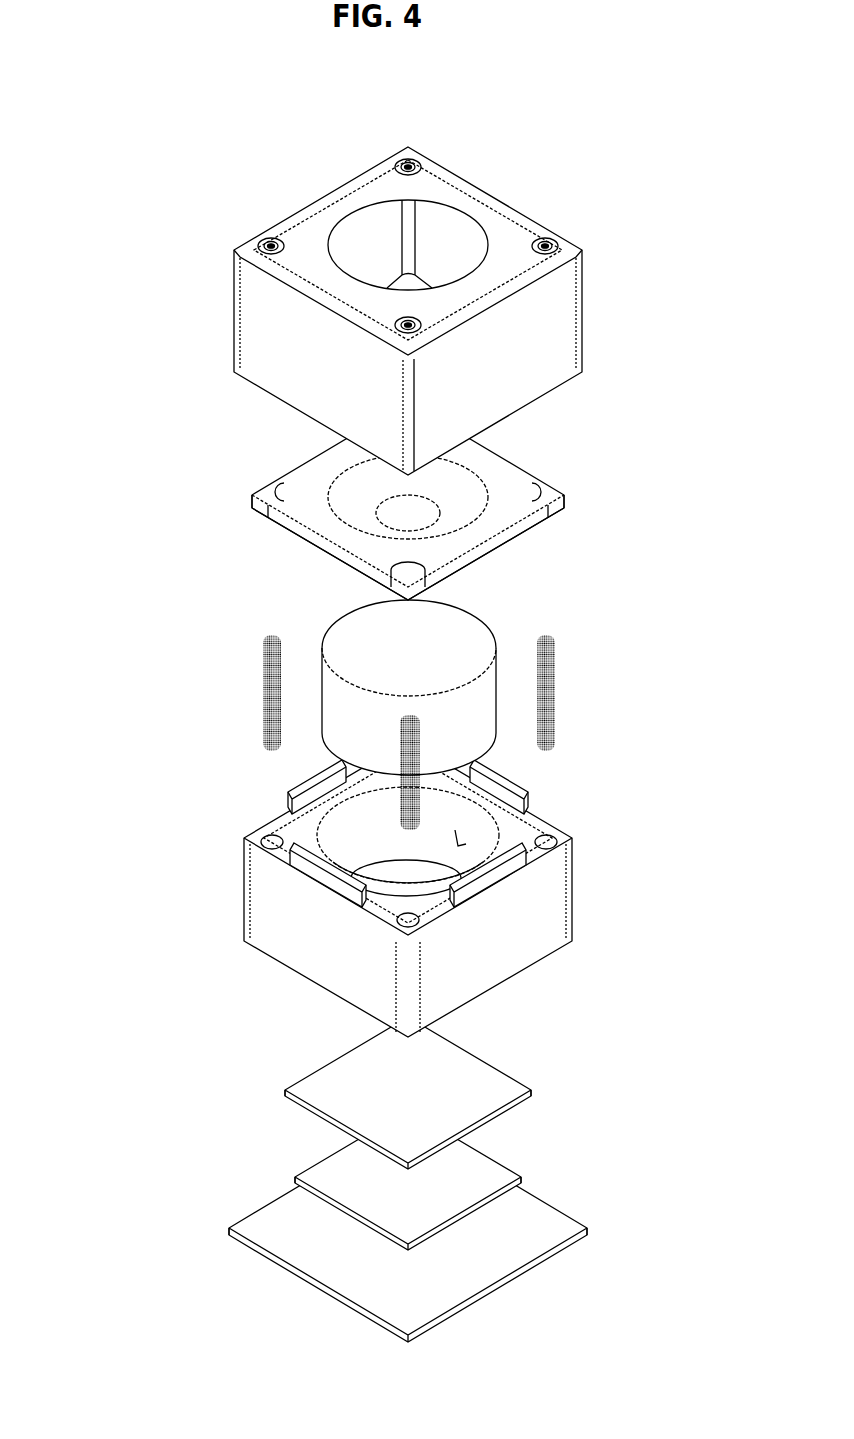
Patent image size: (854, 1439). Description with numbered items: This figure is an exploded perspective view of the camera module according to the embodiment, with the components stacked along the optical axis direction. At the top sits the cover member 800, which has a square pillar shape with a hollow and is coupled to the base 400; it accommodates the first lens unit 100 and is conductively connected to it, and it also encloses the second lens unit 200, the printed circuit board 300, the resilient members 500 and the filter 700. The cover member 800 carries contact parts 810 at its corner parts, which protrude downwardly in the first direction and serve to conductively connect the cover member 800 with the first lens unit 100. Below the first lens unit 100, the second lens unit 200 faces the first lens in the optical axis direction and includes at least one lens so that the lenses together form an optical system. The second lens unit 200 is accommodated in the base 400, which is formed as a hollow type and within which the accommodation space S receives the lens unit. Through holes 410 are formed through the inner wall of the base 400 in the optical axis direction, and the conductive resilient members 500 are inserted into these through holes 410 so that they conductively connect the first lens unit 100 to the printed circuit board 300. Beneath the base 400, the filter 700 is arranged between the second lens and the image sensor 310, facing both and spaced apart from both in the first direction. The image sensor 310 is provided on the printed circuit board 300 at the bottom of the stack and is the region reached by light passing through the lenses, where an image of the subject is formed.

The cover member 800 is at (573, 321).
The contact parts 810 is at (548, 246).
The first lens unit 100 is at (520, 474).
The second lens unit 200 is at (476, 632).
The resilient members 500 is at (557, 696).
The base 400 is at (573, 893).
The through holes 410 is at (552, 843).
The accommodation space S is at (458, 846).
The filter 700 is at (497, 1075).
The image sensor 310 is at (491, 1172).
The printed circuit board 300 is at (552, 1218).